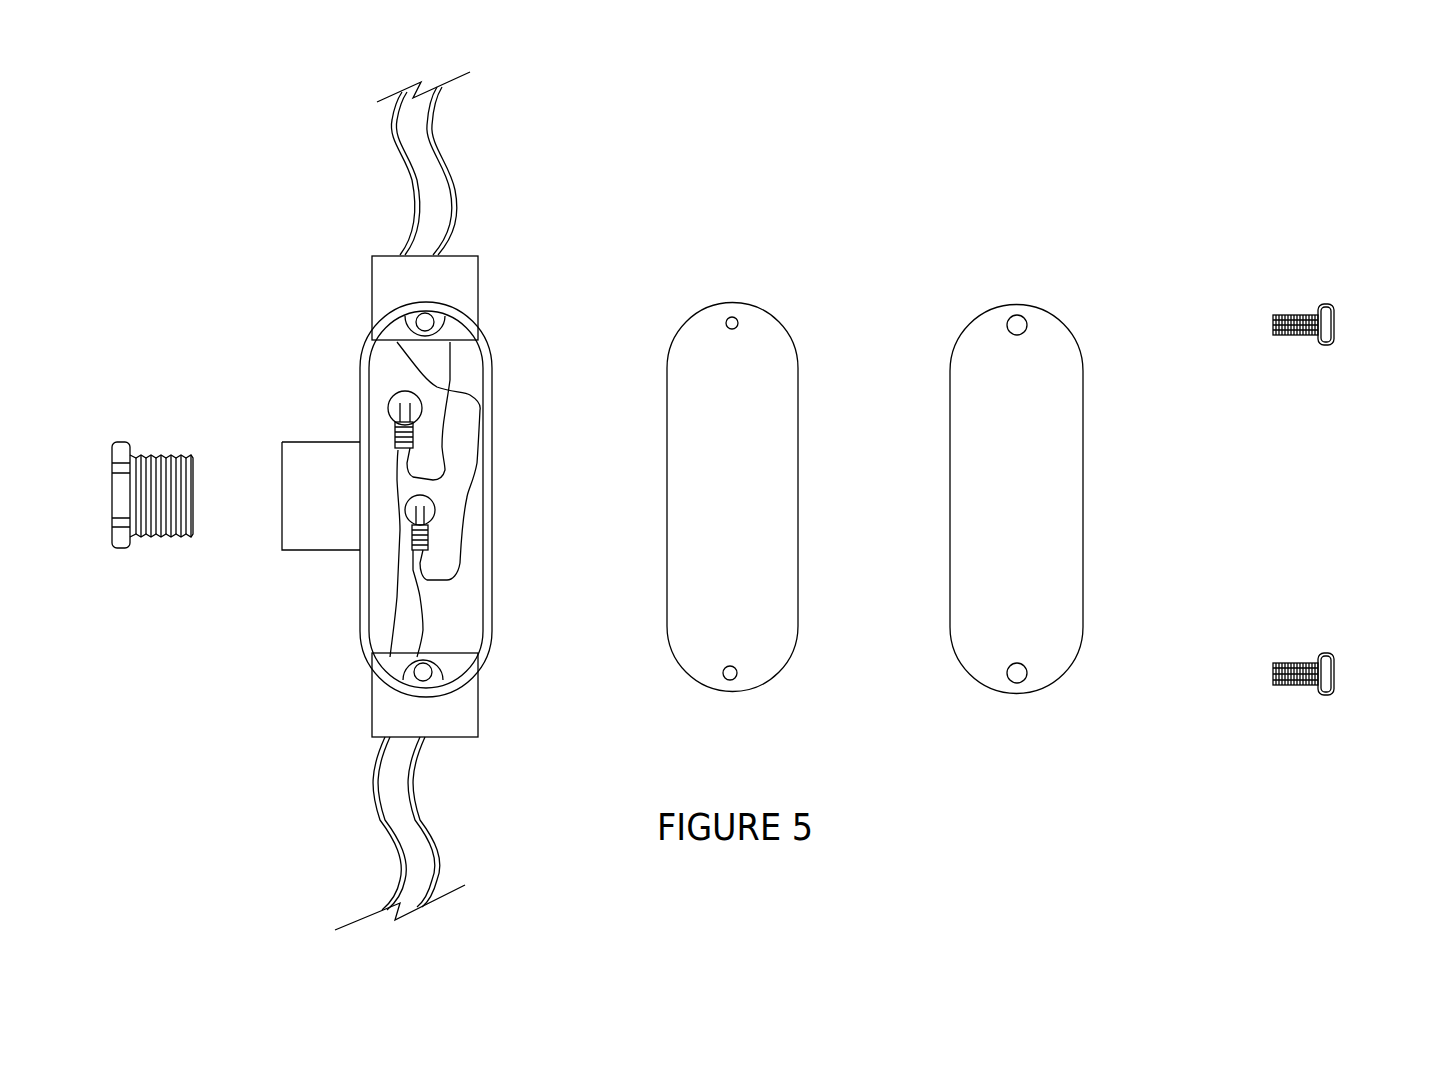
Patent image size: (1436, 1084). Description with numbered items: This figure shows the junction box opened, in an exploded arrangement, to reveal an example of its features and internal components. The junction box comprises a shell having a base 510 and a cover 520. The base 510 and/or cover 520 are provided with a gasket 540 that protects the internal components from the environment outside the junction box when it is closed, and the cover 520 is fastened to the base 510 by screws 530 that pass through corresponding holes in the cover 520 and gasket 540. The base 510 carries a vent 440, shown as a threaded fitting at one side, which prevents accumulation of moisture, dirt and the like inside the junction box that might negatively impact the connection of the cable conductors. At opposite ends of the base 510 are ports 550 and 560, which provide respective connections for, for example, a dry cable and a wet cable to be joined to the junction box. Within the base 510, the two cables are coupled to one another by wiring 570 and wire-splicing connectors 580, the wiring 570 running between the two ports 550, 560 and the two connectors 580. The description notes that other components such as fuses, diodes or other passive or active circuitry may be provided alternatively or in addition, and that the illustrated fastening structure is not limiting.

The vent 440 is at (123, 552).
The base 510 is at (492, 411).
The cover 520 is at (1078, 346).
The screws 530 is at (1338, 322).
The gasket 540 is at (768, 313).
The port 550 is at (480, 297).
The port 560 is at (480, 697).
The wiring 570 is at (467, 468).
The wire-splicing connectors 580 is at (392, 405).